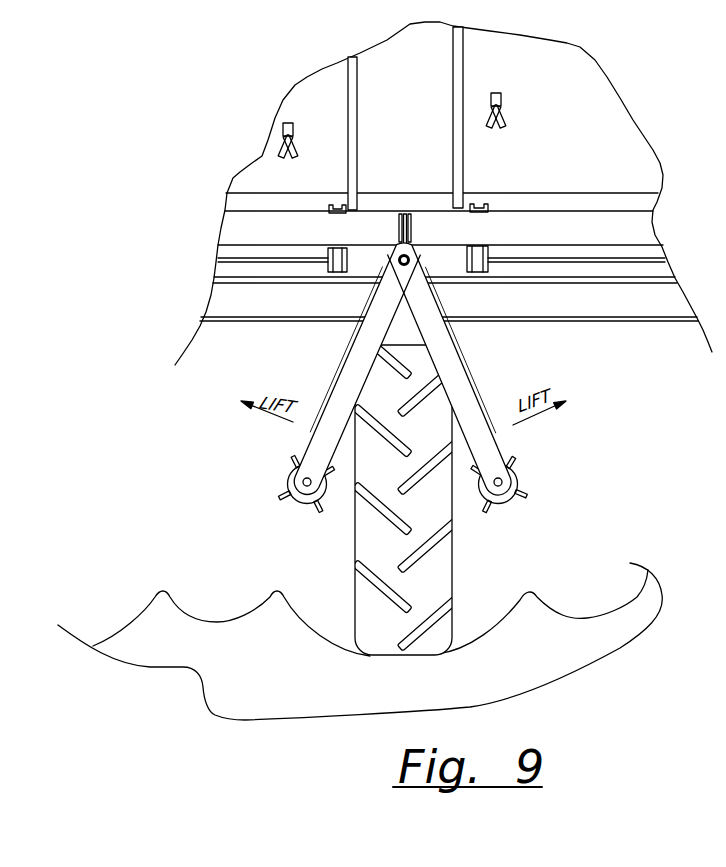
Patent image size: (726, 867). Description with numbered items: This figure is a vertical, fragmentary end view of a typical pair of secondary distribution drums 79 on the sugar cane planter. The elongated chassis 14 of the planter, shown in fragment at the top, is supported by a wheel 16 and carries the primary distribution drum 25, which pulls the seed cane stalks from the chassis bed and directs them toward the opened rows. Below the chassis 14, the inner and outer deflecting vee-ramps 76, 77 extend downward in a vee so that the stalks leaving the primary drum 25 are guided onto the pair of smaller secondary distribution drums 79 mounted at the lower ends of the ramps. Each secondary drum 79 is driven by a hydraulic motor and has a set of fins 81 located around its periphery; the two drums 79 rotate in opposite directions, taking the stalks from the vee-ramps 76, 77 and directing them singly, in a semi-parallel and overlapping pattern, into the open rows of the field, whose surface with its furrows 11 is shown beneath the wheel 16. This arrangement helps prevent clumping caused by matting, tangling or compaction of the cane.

The furrow 11 is at (290, 705).
The chassis 14 is at (268, 328).
The wheel 16 is at (442, 593).
The primary distribution drum 25 is at (563, 180).
The inner vee-ramp 76 is at (467, 362).
The outer vee-ramp 77 is at (328, 393).
The secondary distribution drum 79 is at (300, 502).
The fin 81 is at (289, 481).